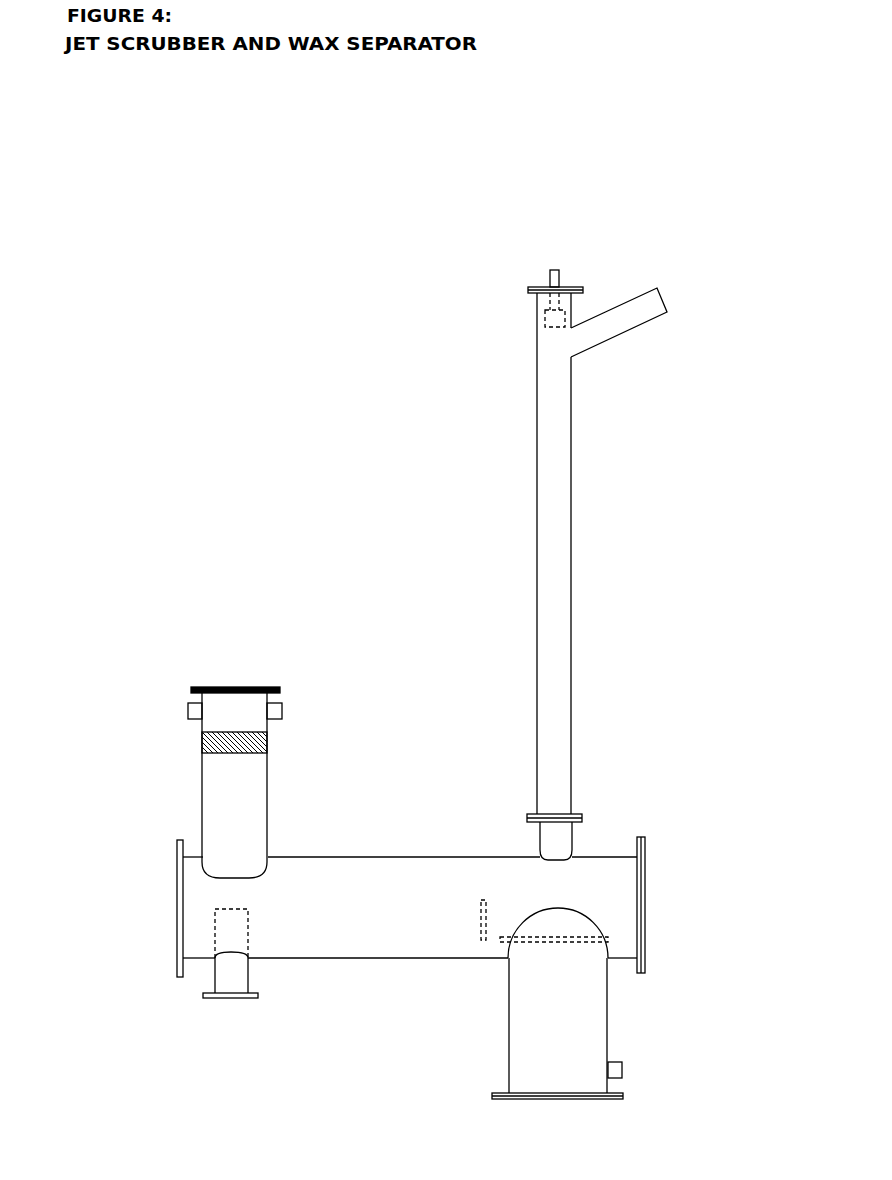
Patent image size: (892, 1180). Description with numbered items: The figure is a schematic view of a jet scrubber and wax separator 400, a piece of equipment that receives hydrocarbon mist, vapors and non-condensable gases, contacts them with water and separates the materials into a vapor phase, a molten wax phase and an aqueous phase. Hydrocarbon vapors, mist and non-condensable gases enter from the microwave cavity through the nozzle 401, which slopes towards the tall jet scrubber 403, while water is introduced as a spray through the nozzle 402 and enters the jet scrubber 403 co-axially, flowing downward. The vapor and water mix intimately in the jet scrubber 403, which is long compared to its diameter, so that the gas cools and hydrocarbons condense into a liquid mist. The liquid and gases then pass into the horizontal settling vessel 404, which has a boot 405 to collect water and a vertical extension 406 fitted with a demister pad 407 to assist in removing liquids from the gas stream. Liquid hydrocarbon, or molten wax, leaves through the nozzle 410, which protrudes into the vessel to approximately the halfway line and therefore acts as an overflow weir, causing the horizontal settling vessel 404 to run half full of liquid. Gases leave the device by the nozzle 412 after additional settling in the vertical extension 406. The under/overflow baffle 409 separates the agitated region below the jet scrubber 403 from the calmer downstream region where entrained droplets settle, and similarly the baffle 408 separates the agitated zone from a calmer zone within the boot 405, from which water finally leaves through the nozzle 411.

The jet scrubber and wax separator equipment 400 is at (432, 604).
The nozzle 401 is at (642, 310).
The nozzle 402 is at (555, 267).
The jet scrubber 403 is at (545, 462).
The horizontal settling vessel 404 is at (627, 875).
The boot 405 is at (585, 1035).
The vertical extension 406 is at (248, 798).
The demister pad 407 is at (248, 747).
The baffle 408 is at (540, 938).
The under/overflow baffle 409 is at (480, 917).
The nozzle 410 is at (240, 920).
The nozzle 411 is at (612, 1070).
The nozzle 412 is at (187, 711).